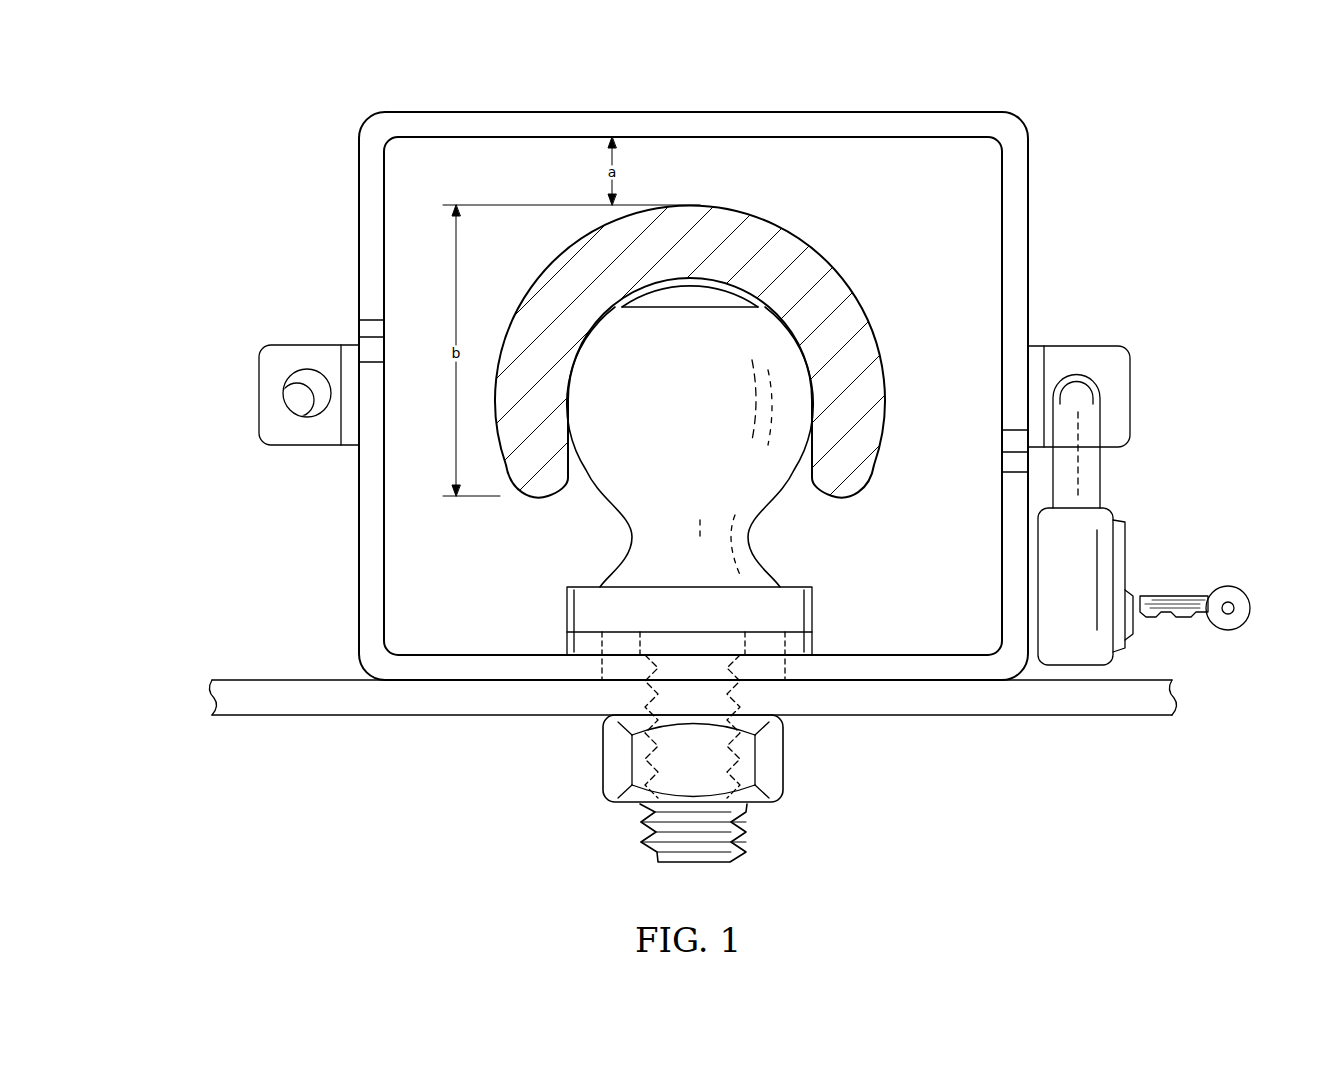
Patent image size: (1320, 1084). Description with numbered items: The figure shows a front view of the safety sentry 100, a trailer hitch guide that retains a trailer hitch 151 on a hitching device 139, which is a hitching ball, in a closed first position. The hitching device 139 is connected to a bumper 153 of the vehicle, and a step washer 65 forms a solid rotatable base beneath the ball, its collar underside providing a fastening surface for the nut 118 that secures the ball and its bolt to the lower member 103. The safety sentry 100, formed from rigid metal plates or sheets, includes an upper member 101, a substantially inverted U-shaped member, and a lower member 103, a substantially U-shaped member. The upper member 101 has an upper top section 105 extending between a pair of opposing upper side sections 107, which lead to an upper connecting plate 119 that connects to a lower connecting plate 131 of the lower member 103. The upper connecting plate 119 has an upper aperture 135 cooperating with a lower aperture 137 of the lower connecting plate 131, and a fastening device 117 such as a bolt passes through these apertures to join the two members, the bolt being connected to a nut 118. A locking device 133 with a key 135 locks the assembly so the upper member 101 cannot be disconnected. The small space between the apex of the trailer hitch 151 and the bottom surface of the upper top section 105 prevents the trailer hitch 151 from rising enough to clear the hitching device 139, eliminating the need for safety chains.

The safety sentry 100 is at (205, 157).
The upper member 101 is at (626, 111).
The lower member 103 is at (358, 560).
The upper top section 105 is at (801, 111).
The upper side sections 107 is at (1030, 196).
The fastening device 117 is at (645, 852).
The nut 118 is at (778, 762).
The upper connecting plate 119 is at (287, 440).
The lower connecting plate 131 is at (296, 355).
The locking device 133 is at (1128, 552).
The key 135 is at (288, 382).
The lower aperture 137 is at (296, 406).
The hitching device 139 is at (628, 536).
The trailer hitch 151 is at (852, 500).
The bumper 153 is at (420, 716).
The step washer 65 is at (812, 640).